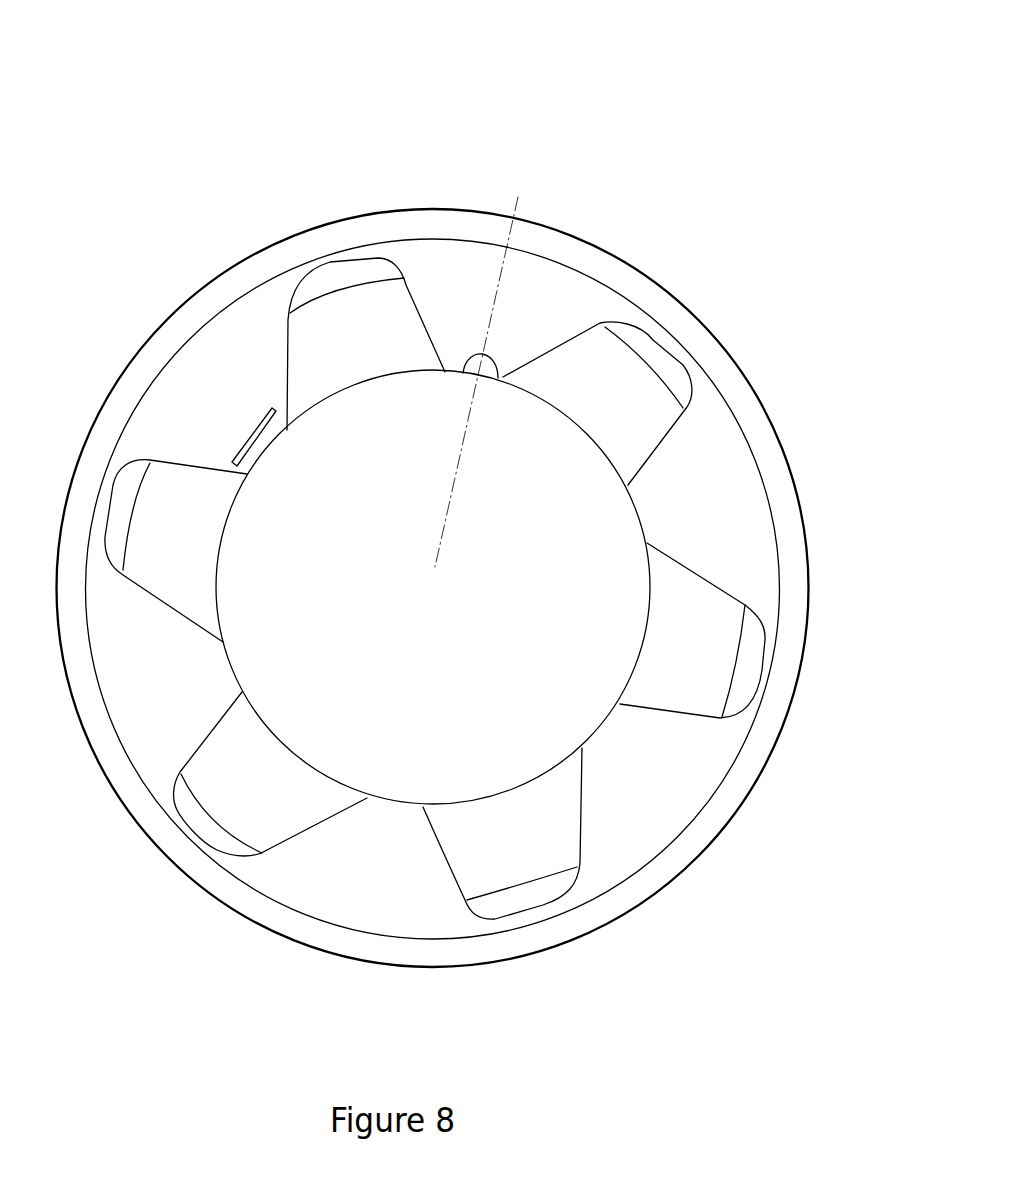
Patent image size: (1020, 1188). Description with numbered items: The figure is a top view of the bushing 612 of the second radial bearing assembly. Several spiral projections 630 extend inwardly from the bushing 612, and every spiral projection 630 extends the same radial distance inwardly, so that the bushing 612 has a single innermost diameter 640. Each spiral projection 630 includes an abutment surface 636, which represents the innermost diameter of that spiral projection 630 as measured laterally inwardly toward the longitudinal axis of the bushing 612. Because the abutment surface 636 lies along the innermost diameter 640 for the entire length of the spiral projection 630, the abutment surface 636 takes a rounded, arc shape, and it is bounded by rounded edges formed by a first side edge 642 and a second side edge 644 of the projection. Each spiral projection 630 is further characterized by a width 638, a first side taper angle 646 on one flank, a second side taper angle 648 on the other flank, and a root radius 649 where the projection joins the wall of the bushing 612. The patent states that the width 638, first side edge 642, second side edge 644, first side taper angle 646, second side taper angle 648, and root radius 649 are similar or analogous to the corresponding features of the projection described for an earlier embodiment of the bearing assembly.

The bushing 612 is at (730, 50).
The spiral projection 630 is at (618, 752).
The abutment surface 636 is at (393, 808).
The width 638 is at (253, 434).
The innermost diameter 640 is at (325, 403).
The first side edge 642 is at (630, 485).
The second side edge 644 is at (653, 540).
The first side taper angle 646 is at (468, 357).
The second side taper angle 648 is at (502, 368).
The root radius 649 is at (198, 810).